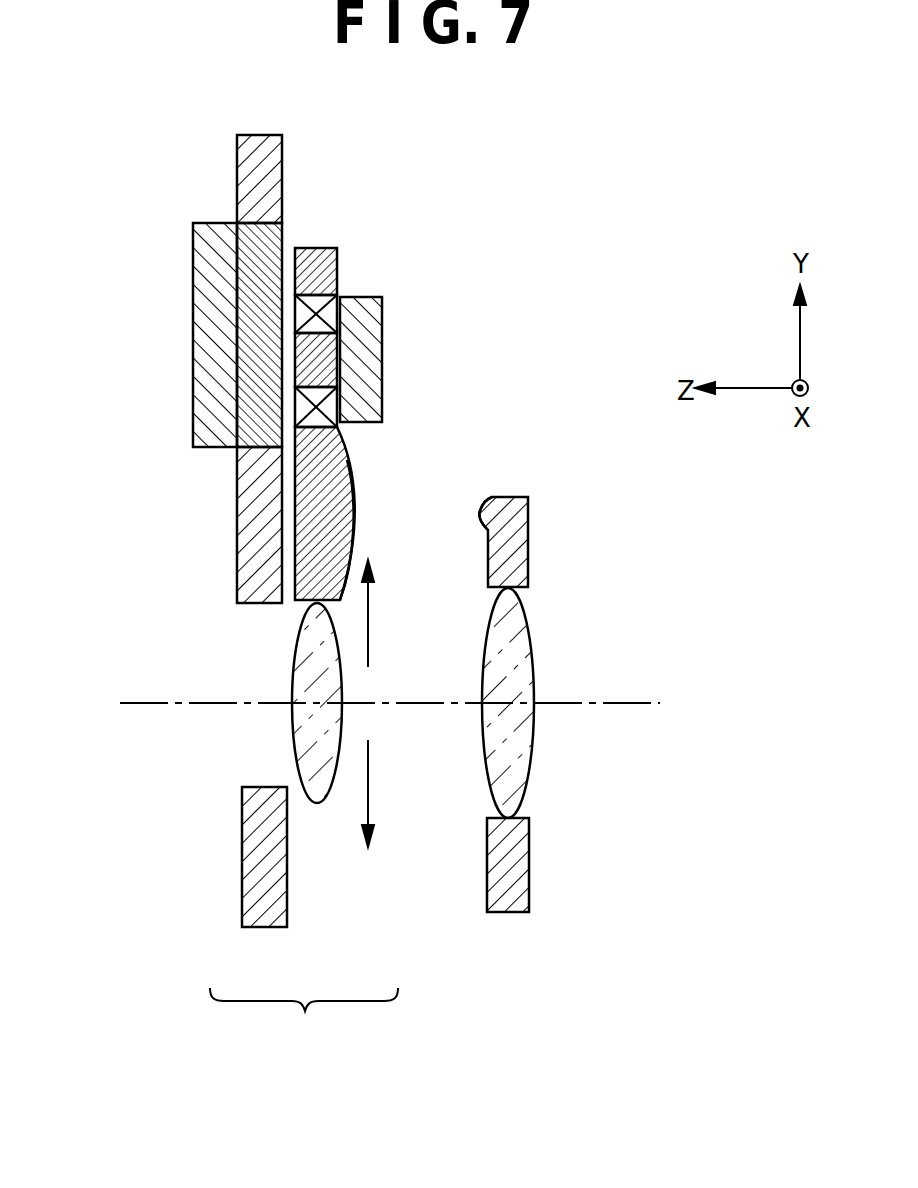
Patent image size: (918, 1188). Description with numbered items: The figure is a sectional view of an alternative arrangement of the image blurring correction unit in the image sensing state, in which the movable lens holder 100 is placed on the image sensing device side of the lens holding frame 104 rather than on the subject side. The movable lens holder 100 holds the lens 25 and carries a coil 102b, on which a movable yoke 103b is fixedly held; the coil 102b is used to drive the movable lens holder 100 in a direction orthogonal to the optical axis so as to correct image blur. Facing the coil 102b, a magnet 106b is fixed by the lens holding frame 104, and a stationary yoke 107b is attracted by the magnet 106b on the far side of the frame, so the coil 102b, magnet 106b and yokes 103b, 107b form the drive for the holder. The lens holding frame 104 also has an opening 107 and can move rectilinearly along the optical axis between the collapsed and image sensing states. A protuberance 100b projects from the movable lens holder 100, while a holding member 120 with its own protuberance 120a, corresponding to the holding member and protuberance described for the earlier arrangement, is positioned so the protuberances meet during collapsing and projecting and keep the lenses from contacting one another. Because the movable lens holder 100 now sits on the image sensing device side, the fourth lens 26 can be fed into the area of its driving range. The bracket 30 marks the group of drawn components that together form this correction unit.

The lens holding frame 104 is at (237, 146).
The stationary yoke 107b is at (203, 268).
The magnet 106b is at (235, 402).
The opening 107 is at (227, 650).
The coil 102b is at (338, 296).
The movable yoke 103b is at (376, 318).
The movable lens holder 100 is at (347, 457).
The protuberance 100b is at (353, 542).
The protuberance 120a is at (479, 505).
The holding member 120 is at (528, 572).
The lens 25 is at (298, 736).
The fourth lens 26 is at (520, 742).
The objective lens actuator 30 is at (304, 1019).